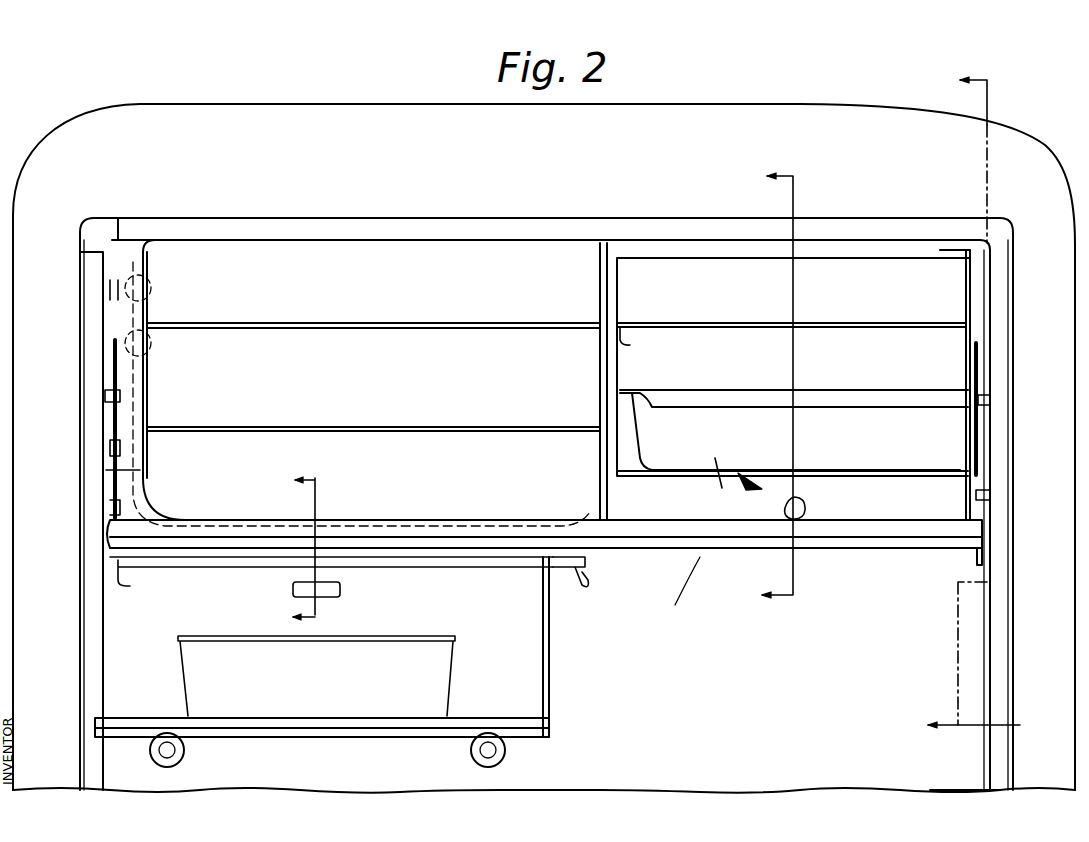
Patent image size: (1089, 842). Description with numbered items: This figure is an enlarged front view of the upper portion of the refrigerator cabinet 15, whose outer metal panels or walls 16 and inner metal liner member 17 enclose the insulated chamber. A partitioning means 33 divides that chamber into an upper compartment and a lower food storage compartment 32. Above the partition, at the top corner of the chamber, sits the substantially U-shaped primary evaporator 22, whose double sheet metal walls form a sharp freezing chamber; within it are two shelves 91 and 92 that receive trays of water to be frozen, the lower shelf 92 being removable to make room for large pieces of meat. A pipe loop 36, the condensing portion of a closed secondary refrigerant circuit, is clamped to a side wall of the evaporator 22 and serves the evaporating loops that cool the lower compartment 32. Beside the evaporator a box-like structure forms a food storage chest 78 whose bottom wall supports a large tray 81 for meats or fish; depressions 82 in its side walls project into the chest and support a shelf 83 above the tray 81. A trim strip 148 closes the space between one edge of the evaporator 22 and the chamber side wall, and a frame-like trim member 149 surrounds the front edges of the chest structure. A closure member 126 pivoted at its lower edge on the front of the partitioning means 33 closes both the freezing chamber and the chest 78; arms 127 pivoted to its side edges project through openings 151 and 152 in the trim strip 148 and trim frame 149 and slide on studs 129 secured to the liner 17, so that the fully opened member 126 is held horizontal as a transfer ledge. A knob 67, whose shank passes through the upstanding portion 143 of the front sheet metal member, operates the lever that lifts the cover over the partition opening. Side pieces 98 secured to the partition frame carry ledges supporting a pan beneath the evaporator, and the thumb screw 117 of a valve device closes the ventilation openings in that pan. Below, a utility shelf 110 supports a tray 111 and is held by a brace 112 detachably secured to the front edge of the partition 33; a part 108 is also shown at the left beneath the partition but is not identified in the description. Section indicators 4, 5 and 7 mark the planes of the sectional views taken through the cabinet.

The section line 4- 4 is at (982, 403).
The section line 5- 5 is at (800, 390).
The section line 7- 7 is at (322, 550).
The refrigerator cabinet 15 is at (362, 101).
The outer metal panels 16 is at (250, 130).
The inner metal liner member 17 is at (112, 660).
The primary evaporator 22 is at (147, 492).
The lower food storage compartment 32 is at (834, 755).
The partitioning means 33 is at (674, 629).
The pipe loop 36 is at (110, 503).
The knob 67 is at (803, 506).
The food storage chest 78 is at (793, 367).
The tray 81 is at (876, 392).
The depression 82 is at (632, 344).
The shelf 83 is at (688, 322).
The shelf 91 is at (448, 322).
The shelf 92 is at (448, 425).
The side piece 98 is at (595, 577).
The hanger bracket 108 is at (204, 576).
The utility shelf 110 is at (470, 714).
The tray 111 is at (316, 676).
The brace 112 is at (540, 612).
The thumb screw 117 is at (292, 590).
The closure member 126 is at (690, 518).
The arm 127 is at (112, 448).
The stud 129 is at (100, 400).
The upstanding portion 143 is at (731, 465).
The trim strip 148 is at (117, 278).
The frame-like trim member 149 is at (657, 248).
The opening 151 is at (112, 350).
The opening 152 is at (982, 352).